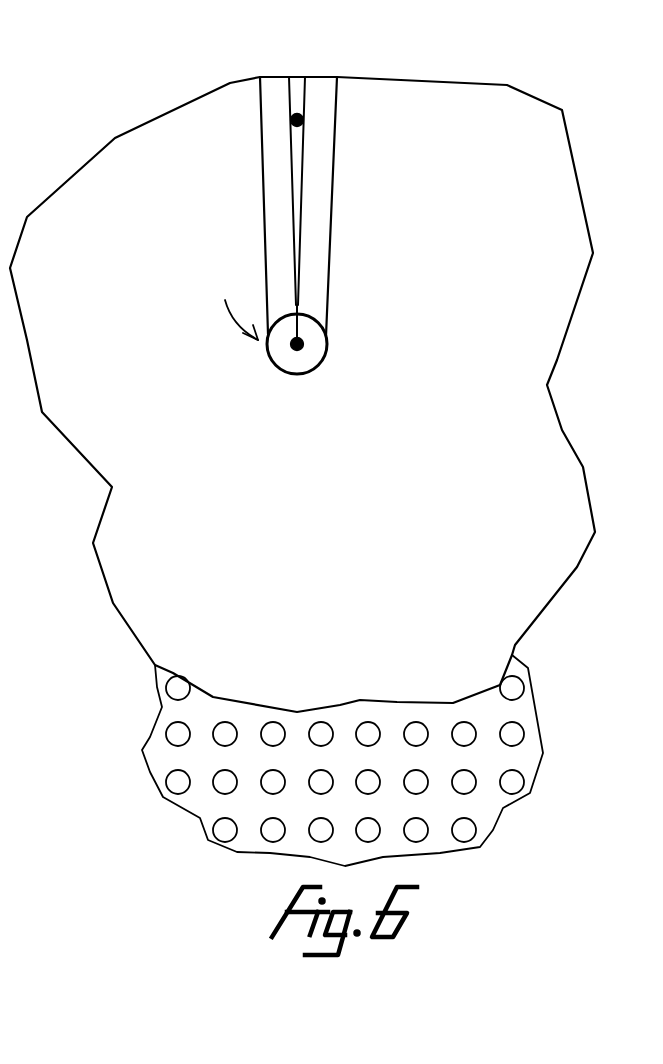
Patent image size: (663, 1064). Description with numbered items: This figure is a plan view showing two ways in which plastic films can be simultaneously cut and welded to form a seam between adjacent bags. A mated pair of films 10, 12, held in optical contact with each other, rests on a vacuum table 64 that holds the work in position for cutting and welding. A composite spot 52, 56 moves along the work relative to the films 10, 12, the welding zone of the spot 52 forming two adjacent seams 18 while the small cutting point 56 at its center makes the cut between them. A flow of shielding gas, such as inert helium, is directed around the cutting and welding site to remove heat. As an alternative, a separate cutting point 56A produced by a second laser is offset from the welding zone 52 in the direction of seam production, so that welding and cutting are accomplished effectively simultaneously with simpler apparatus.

The film 10 is at (161, 297).
The film 12 is at (191, 341).
The seams 18 is at (273, 200).
The spot 52 is at (311, 357).
The cutting point 56 is at (303, 343).
The cutting point 56A is at (301, 116).
The vacuum table 64 is at (158, 773).